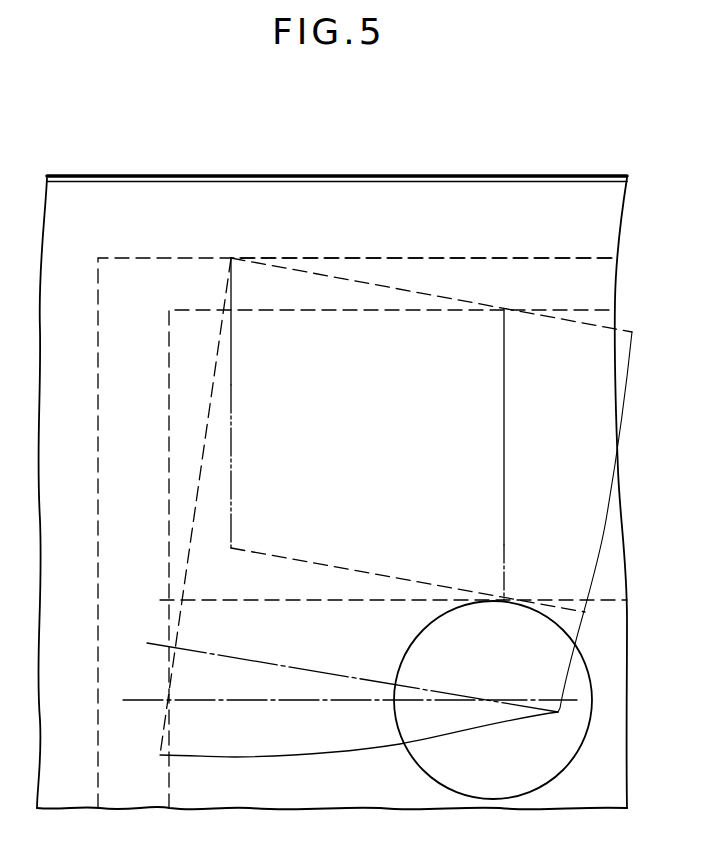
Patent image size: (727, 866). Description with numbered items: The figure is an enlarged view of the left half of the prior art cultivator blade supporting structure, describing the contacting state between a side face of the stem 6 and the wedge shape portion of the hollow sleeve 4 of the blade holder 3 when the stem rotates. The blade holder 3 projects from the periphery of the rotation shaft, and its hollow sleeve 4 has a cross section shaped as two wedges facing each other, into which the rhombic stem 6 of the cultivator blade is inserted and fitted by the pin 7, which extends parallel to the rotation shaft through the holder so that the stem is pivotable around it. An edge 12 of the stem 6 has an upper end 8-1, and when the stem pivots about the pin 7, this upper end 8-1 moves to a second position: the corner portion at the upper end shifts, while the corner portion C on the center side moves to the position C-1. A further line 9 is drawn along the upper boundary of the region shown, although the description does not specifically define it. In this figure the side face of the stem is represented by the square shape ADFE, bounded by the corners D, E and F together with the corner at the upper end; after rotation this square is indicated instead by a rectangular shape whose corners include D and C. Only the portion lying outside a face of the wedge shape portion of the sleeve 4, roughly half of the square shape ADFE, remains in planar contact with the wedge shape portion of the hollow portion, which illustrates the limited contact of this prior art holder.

The blade holder 3 is at (88, 191).
The hollow sleeve 4 is at (138, 273).
The stem 6 is at (620, 578).
The pin 7 is at (488, 782).
The upper boundary line 9 is at (406, 262).
The upper end 8-1 is at (166, 311).
The edge 12 is at (227, 286).
The corner of square shape ADFE E is at (505, 310).
The corner of square shape ADFE F is at (505, 600).
The corner of square shape ADFE D is at (233, 548).
The corner portion on the center side C is at (161, 600).
The position of corner portion C C-1 is at (231, 548).